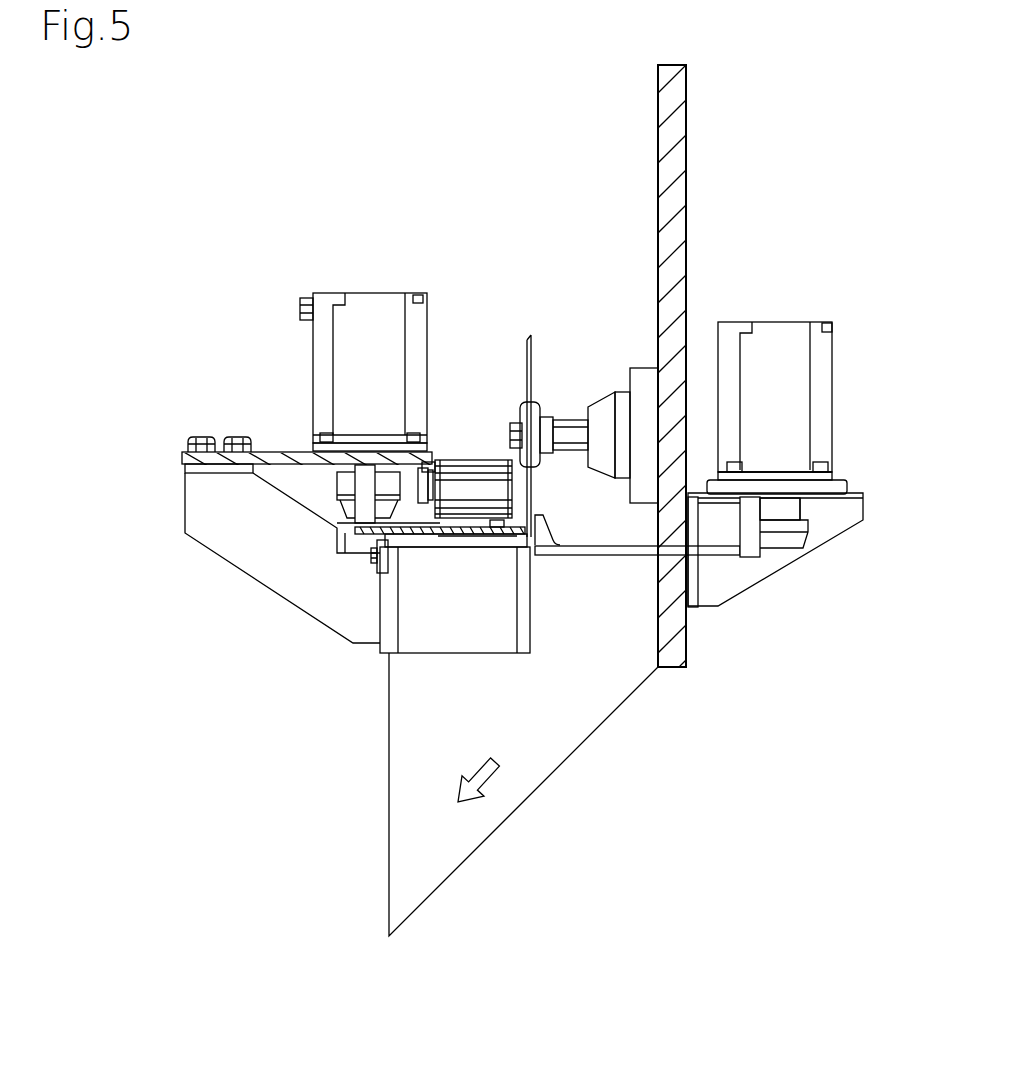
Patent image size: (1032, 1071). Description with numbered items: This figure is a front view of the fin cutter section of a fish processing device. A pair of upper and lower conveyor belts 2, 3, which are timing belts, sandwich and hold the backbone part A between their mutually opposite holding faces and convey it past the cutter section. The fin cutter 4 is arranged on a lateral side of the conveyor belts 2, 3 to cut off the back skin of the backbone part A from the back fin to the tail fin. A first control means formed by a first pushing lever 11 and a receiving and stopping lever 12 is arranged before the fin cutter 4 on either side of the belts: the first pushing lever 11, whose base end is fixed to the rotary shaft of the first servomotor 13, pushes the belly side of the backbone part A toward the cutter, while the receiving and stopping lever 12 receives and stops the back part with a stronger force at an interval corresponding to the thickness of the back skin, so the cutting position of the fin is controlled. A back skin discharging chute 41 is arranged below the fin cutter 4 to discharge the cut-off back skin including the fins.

The upper conveyor belt 2 is at (455, 534).
The lower conveyor belt 3 is at (490, 537).
The fin cutter 4 is at (527, 356).
The first pushing lever 11 is at (420, 547).
The receiving and stopping lever 12 is at (624, 555).
The first servomotor 13 is at (313, 368).
The back skin discharging chute 41 is at (548, 762).
The backbone part A is at (535, 514).